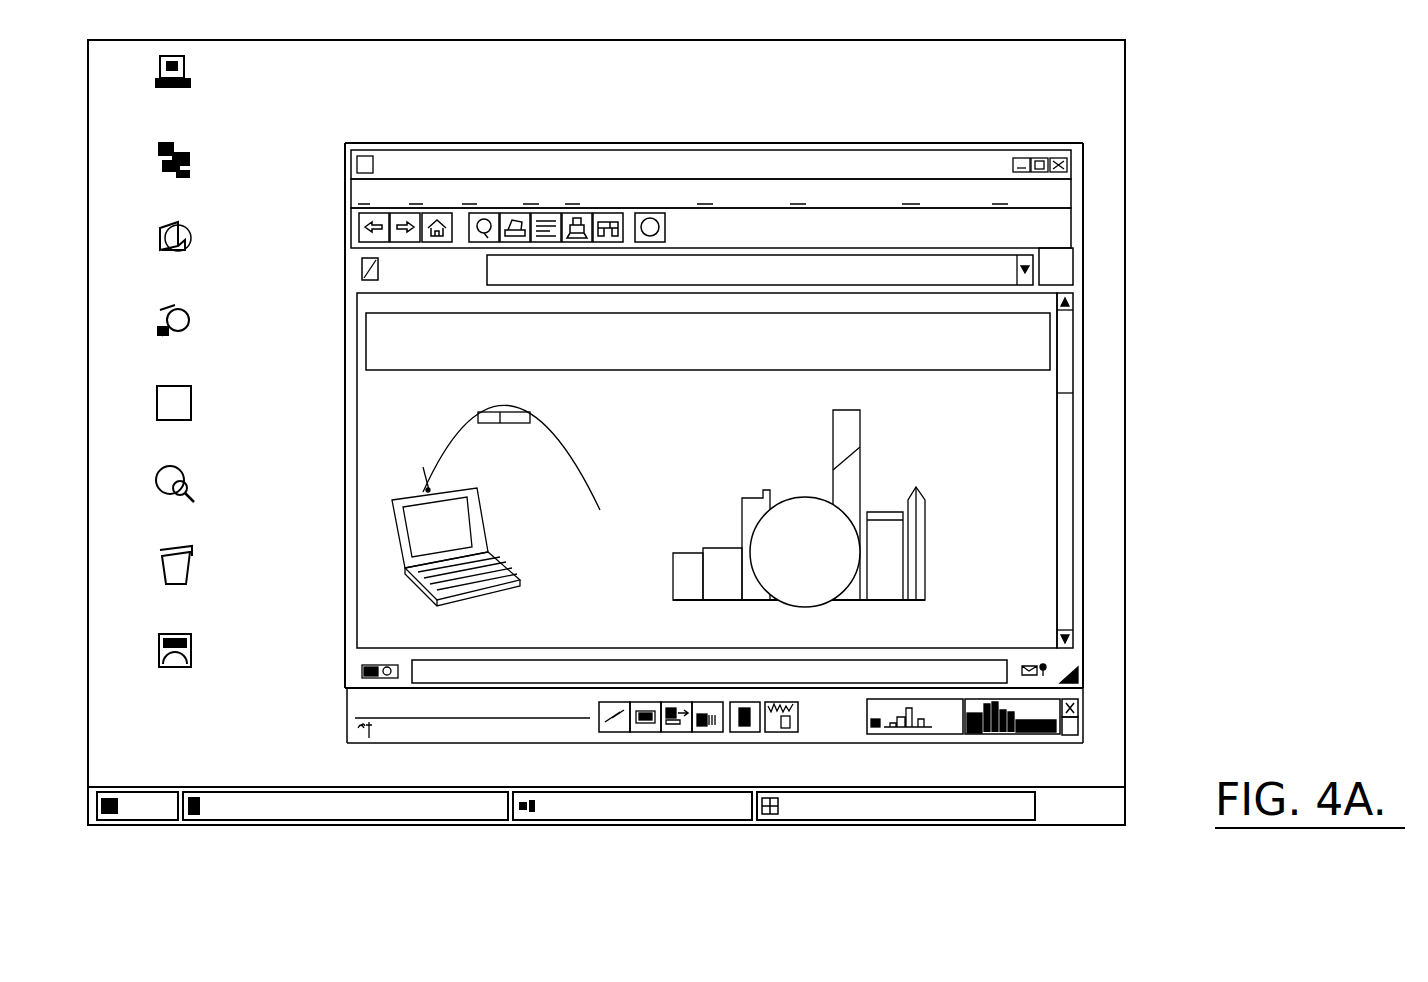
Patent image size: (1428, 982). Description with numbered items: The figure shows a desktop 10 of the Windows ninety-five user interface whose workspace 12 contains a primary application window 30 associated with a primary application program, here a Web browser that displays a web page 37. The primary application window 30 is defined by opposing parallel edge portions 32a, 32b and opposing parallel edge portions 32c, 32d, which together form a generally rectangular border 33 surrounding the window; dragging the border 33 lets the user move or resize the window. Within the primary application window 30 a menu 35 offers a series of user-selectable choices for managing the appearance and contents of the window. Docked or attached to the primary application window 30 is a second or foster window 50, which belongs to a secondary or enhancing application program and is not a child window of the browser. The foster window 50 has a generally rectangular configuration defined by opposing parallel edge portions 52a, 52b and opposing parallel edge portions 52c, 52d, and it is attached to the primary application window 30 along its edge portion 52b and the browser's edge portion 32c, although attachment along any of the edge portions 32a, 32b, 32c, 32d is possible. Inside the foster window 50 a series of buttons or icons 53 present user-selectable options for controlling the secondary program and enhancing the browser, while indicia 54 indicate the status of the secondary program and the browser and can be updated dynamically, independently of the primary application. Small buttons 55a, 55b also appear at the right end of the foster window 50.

The desktop 10 is at (683, 432).
The workspace 12 is at (657, 82).
The primary application window 30 is at (600, 364).
The edge portion 32a is at (1141, 415).
The edge portion 32b is at (345, 485).
The edge portion 32c is at (1083, 683).
The edge portion 32d is at (482, 140).
The border 33 is at (771, 470).
The menu 35 is at (350, 188).
The web page 37 is at (985, 431).
The foster window 50 is at (717, 713).
The edge portion 52a is at (715, 761).
The edge portion 52b is at (347, 688).
The edge portion 52c is at (310, 735).
The edge portion 52d is at (1083, 740).
The icons 53 is at (702, 733).
The indicia 54 is at (987, 733).
The close button 55a is at (1078, 707).
The help button 55b is at (1068, 737).